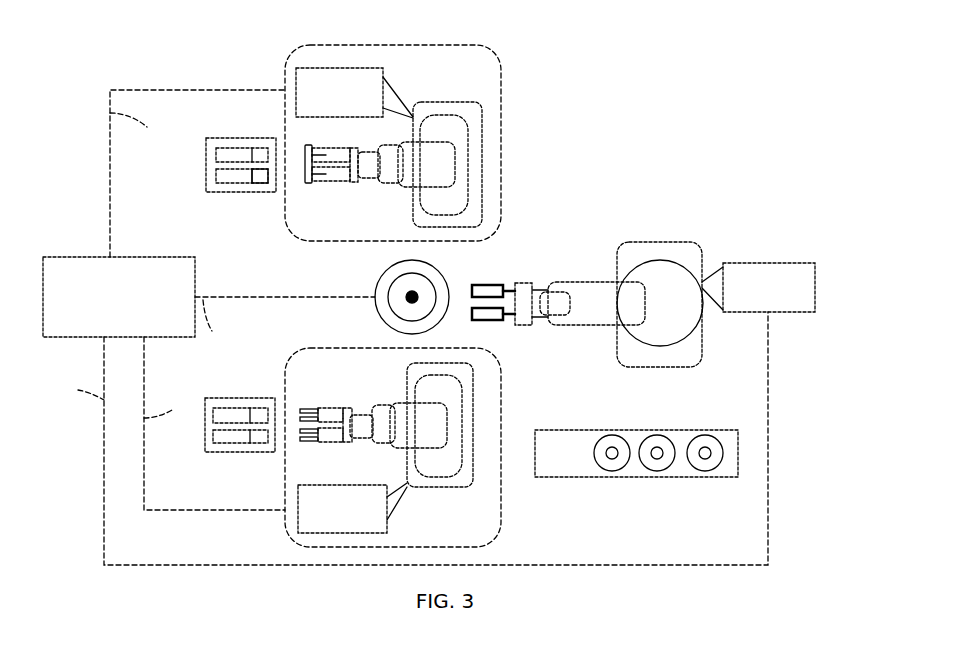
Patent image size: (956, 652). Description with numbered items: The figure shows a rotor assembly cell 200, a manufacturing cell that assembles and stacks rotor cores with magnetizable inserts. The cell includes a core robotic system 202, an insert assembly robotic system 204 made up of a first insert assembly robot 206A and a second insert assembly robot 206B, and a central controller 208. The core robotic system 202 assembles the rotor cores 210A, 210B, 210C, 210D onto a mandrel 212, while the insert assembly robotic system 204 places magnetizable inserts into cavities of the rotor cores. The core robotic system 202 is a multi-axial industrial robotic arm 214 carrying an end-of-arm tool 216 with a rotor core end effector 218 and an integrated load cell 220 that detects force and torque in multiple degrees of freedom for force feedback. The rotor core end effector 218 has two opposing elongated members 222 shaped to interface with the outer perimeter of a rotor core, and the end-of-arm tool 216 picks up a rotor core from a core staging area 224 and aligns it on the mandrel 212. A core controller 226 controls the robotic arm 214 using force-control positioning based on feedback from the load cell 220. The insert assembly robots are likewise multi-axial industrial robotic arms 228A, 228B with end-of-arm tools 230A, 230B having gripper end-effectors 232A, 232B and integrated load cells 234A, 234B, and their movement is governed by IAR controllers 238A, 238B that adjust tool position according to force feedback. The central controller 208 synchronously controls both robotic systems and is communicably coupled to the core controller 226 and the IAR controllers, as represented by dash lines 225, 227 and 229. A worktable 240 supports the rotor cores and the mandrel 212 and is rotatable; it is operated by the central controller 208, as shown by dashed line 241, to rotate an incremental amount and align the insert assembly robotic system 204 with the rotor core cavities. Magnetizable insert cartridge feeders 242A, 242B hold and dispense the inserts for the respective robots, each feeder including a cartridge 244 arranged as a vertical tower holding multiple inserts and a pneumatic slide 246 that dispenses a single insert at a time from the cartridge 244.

The rotor assembly cell 200 is at (637, 100).
The core robotic system 202 is at (609, 285).
The insert assembly robotic (IAR) system 204 is at (302, 303).
The first insert assembly robot 206A is at (426, 129).
The second insert assembly robot 206B is at (353, 470).
The central controller 208 is at (98, 257).
The rotor core 210A is at (403, 275).
The rotor core 210B is at (612, 435).
The rotor core 210C is at (657, 435).
The rotor core 210D is at (705, 435).
The mandrel 212 is at (406, 300).
The robotic arm 214 is at (578, 282).
The end-of-arm tool 216 is at (528, 332).
The rotor core end effector 218 is at (491, 288).
The load cell 220 is at (523, 283).
The opposing elongated members 222 is at (474, 285).
The core staging area 224 is at (646, 464).
The dash line 225 is at (74, 389).
The core controller 226 is at (785, 263).
The dash line 227 is at (142, 126).
The industrial robotic arm 228A is at (433, 102).
The industrial robotic arm 228B is at (435, 487).
The dash line 229 is at (214, 423).
The end-of-arm tool 230A is at (363, 170).
The end-of-arm tool 230B is at (373, 420).
The gripper end-effector 232A is at (306, 166).
The gripper end-effector 232B is at (302, 403).
The load cell 234A is at (338, 156).
The load cell 234B is at (330, 430).
The IAR controller 238A is at (330, 68).
The IAR controller 238B is at (338, 533).
The worktable 240 is at (382, 288).
The dashed line 241 is at (221, 322).
The magnetizable insert cartridge feeder 242A is at (213, 159).
The magnetizable insert cartridge feeder 242B is at (240, 396).
The cartridge 244 is at (260, 192).
The pneumatic slide 246 is at (216, 176).